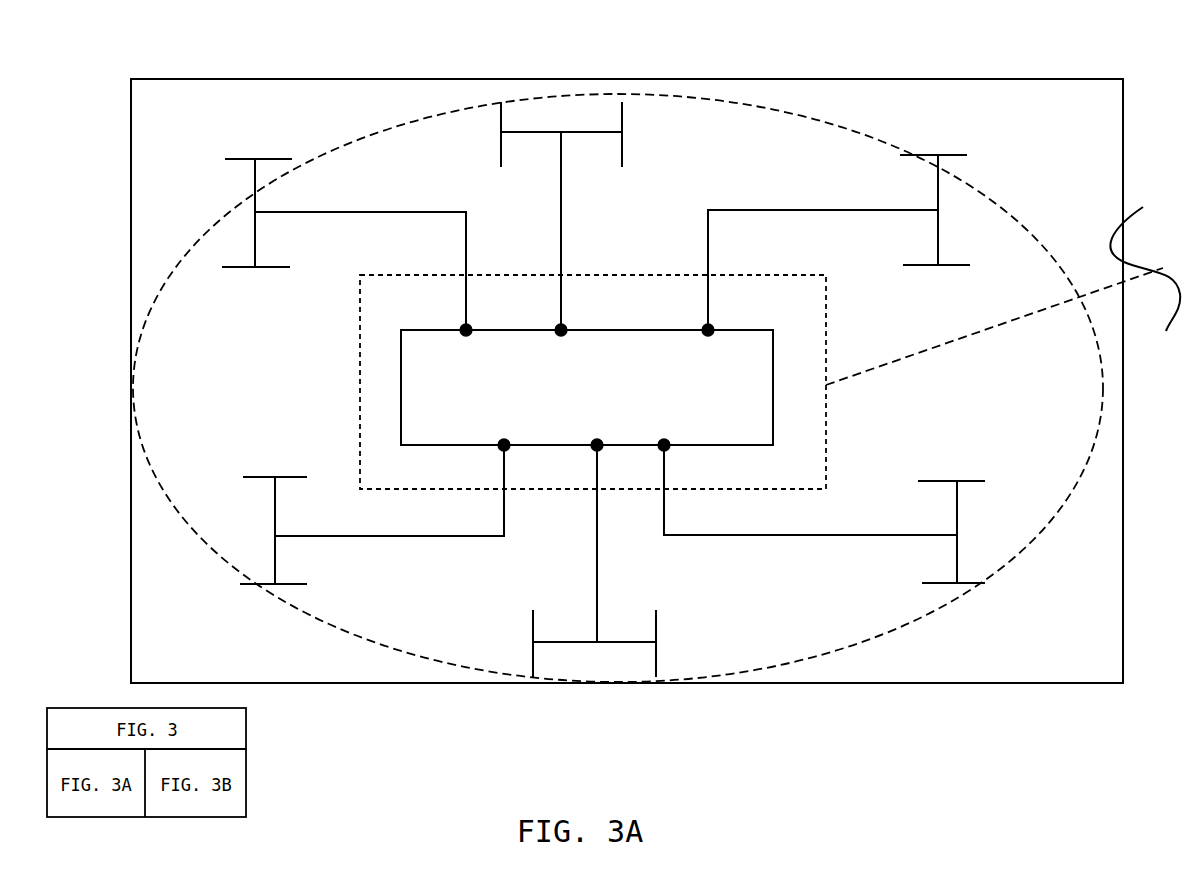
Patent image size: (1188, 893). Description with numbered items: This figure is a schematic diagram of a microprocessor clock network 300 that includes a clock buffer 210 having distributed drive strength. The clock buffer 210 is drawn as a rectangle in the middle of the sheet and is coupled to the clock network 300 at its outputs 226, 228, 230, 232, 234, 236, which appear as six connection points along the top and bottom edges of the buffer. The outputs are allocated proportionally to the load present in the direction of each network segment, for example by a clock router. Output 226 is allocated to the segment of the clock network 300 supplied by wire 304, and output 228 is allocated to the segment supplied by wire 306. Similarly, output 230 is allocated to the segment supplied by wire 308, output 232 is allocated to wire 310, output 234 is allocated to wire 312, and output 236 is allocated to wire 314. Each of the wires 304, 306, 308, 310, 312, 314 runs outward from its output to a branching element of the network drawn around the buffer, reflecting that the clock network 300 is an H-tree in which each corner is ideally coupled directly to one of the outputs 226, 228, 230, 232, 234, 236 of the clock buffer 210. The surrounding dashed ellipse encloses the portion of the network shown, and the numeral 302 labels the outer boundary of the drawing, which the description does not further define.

The microprocessor clock network 300 is at (152, 215).
The substrate 302 is at (1103, 669).
The clock buffer 210 is at (762, 439).
The output 226 is at (460, 326).
The output 228 is at (566, 326).
The output 230 is at (714, 325).
The output 232 is at (498, 452).
The output 234 is at (592, 452).
The output 236 is at (670, 452).
The wire 304 is at (352, 212).
The wire 306 is at (561, 237).
The wire 308 is at (743, 210).
The wire 310 is at (472, 536).
The wire 312 is at (597, 536).
The wire 314 is at (850, 535).